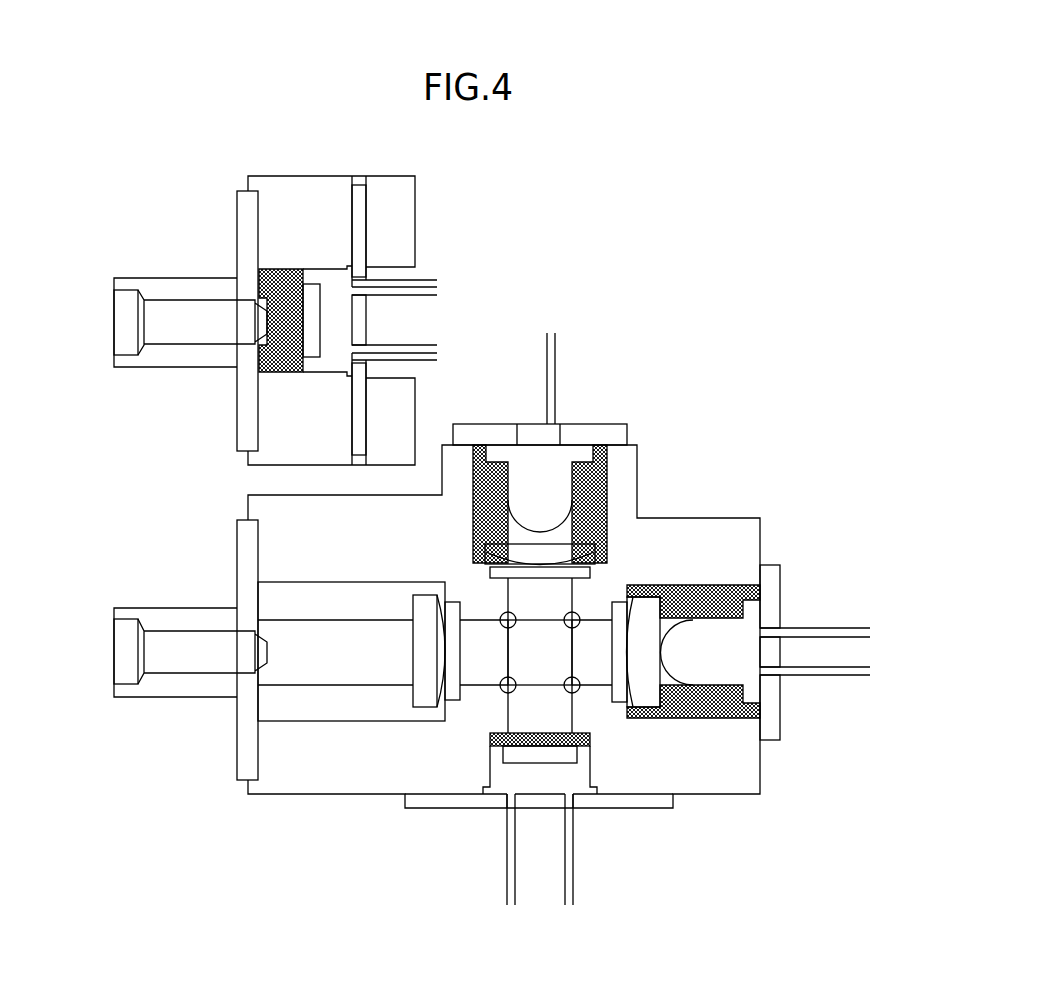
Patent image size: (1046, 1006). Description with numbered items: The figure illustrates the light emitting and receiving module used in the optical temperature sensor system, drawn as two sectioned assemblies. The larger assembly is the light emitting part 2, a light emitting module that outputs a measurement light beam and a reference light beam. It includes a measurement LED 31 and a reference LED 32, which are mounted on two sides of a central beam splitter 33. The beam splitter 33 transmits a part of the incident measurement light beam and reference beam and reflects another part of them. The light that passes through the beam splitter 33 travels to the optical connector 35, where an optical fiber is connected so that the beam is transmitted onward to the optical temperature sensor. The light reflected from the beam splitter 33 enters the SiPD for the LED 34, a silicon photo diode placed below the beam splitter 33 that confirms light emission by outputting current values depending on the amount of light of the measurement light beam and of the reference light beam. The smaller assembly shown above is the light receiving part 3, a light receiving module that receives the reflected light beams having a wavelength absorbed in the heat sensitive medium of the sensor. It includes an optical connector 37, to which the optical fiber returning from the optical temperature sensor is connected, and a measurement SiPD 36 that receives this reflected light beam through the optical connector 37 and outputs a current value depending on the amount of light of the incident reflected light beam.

The light emitting part 2 is at (236, 488).
The light receiving part 3 is at (222, 193).
The measurement LED 31 is at (743, 628).
The reference LED 32 is at (525, 462).
The beam splitter 33 is at (553, 657).
The SiPD for an LED 34 is at (538, 778).
The optical connector 35 is at (120, 651).
The measurement SiPD 36 is at (340, 320).
The optical connector 37 is at (120, 321).